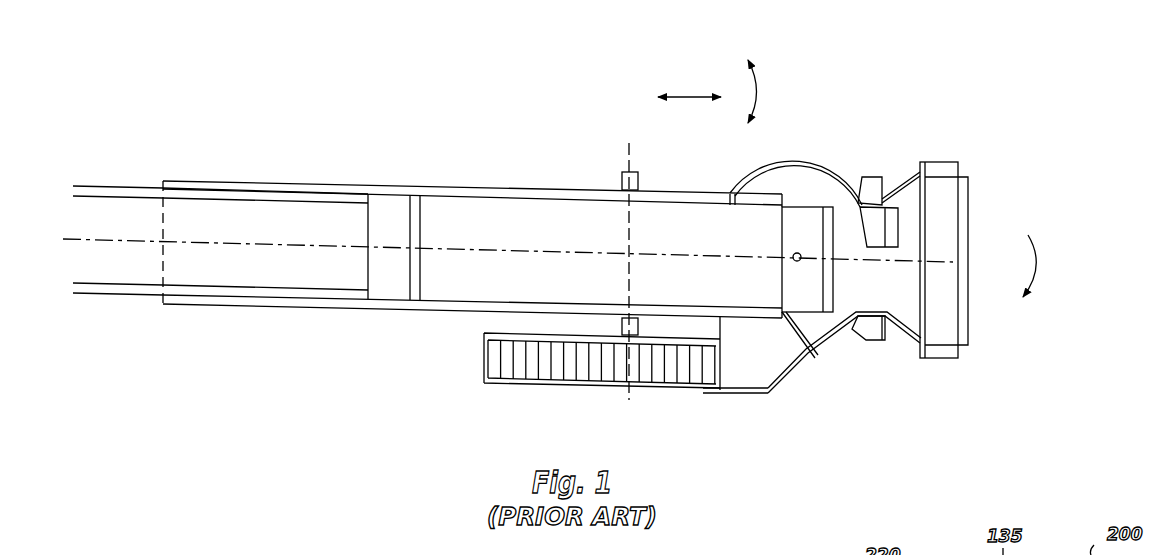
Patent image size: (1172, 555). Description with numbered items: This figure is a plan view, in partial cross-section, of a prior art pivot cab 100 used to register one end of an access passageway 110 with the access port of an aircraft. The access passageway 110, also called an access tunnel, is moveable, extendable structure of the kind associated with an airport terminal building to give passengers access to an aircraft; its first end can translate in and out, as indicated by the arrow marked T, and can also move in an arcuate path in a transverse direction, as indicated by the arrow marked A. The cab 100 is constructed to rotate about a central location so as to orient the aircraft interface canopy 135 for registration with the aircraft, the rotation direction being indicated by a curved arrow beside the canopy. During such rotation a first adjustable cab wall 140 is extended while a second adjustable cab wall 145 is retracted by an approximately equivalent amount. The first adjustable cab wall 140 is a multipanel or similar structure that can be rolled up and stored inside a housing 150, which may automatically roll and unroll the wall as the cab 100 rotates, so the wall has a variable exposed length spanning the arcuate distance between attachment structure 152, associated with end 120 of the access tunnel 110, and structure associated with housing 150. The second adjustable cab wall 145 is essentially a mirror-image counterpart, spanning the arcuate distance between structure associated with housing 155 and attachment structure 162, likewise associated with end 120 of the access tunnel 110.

The pivot cab 100 is at (937, 118).
The access passageway 110 is at (470, 188).
The end of access tunnel 120 is at (684, 179).
The aircraft interface canopy 135 is at (947, 170).
The first adjustable cab wall 140 is at (777, 163).
The second adjustable cab wall 145 is at (828, 345).
The housing 150 is at (867, 177).
The attachment structure 152 is at (720, 193).
The housing 155 is at (875, 333).
The attachment structure 162 is at (808, 352).